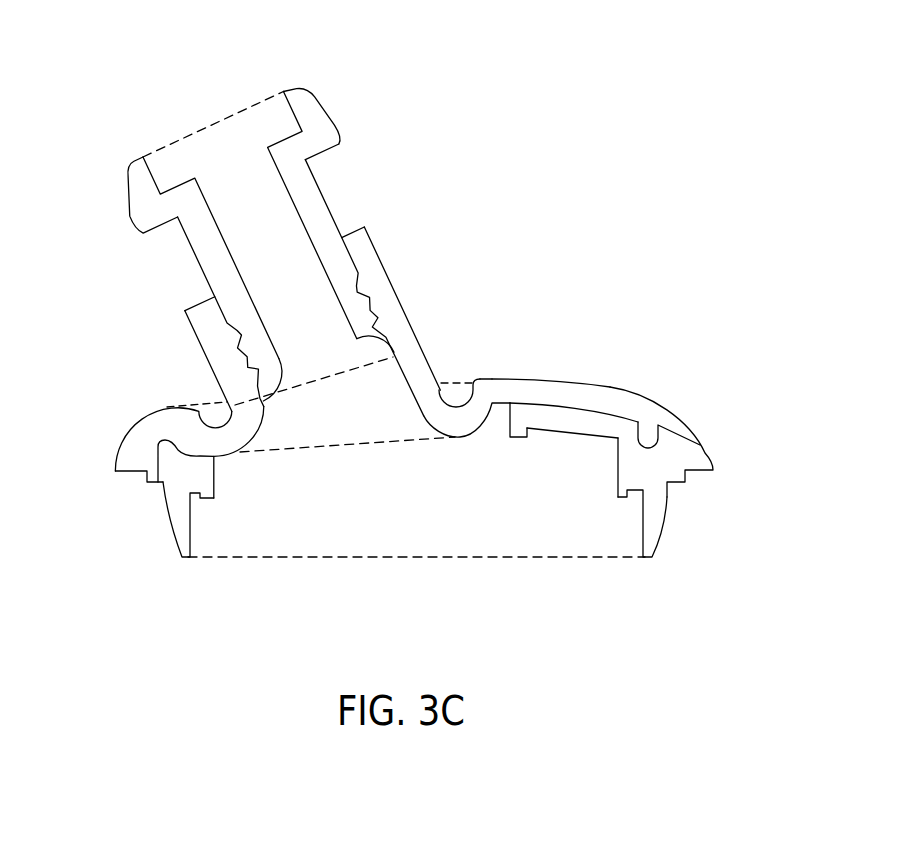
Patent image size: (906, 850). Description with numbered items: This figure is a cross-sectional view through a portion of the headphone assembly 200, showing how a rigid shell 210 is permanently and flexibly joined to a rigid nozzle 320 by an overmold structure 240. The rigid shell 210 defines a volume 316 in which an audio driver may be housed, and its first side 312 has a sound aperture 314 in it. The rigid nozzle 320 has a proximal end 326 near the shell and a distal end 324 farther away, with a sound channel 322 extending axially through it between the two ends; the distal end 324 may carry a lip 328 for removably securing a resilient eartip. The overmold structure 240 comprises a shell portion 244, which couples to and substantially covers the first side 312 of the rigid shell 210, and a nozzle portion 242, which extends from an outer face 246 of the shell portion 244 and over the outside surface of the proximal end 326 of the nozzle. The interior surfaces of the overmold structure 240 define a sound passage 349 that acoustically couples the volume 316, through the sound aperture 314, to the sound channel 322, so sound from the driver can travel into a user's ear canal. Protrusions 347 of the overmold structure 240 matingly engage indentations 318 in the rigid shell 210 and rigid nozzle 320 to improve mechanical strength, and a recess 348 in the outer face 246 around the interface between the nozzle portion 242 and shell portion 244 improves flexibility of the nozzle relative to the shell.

The headphone assembly 200 is at (498, 119).
The rigid shell 210 is at (656, 512).
The overmold structure 240 is at (369, 359).
The nozzle portion 242 is at (396, 318).
The shell portion 244 is at (558, 386).
The outer face 246 is at (492, 378).
The first side 312 is at (655, 415).
The sound aperture 314 is at (340, 464).
The volume 316 is at (517, 526).
The indentations 318 is at (362, 273).
The rigid nozzle 320 is at (327, 203).
The sound channel 322 is at (227, 164).
The distal end 324 is at (285, 90).
The proximal end 326 is at (377, 352).
The lip 328 is at (328, 153).
The protrusions 347 is at (380, 353).
The recess 348 is at (456, 380).
The sound passage 349 is at (327, 417).